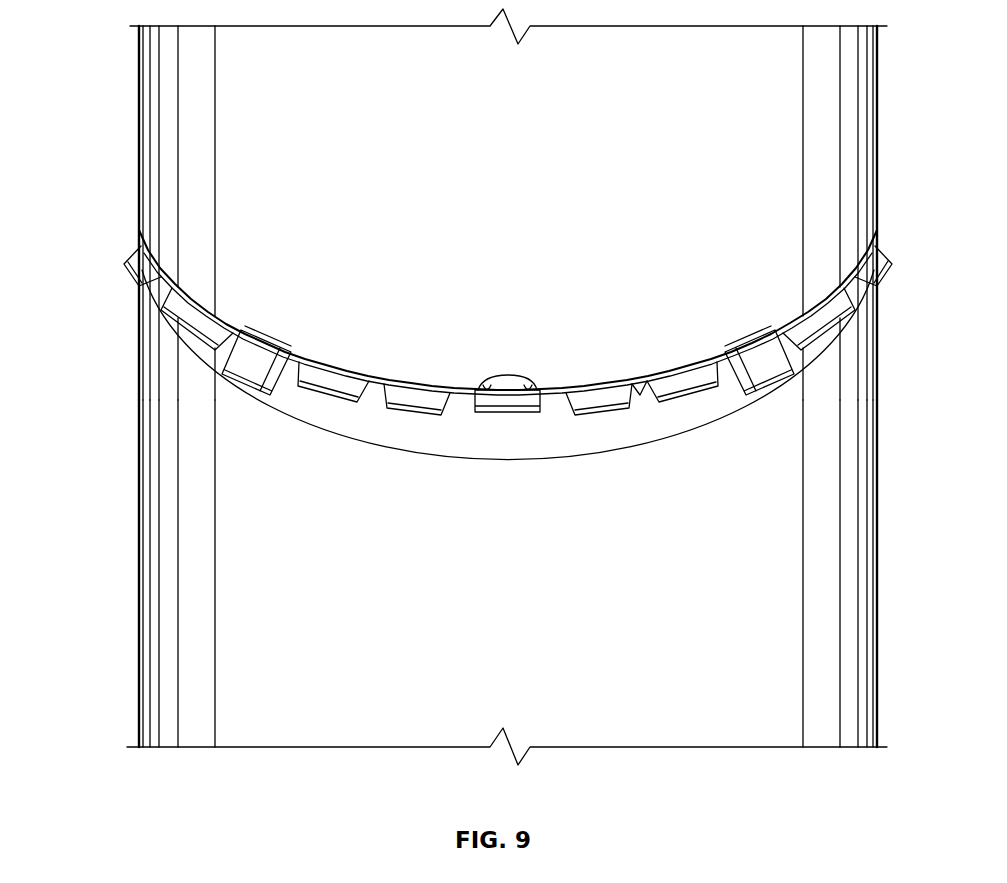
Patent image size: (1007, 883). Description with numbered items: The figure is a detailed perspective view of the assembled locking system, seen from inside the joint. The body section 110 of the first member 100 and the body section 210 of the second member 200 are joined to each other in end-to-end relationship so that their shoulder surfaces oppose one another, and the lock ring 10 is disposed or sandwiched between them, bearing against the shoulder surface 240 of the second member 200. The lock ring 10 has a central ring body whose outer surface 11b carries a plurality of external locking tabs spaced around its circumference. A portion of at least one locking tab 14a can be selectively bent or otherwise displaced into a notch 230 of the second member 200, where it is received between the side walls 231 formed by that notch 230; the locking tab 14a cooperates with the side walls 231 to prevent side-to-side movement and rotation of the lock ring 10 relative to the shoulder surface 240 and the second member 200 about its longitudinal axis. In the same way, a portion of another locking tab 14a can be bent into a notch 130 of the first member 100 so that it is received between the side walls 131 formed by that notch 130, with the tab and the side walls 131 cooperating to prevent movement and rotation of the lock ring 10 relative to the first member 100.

The first member 100 is at (138, 143).
The body section 110 is at (832, 128).
The second member 200 is at (138, 619).
The body section 210 is at (850, 572).
The lock ring 10 is at (420, 424).
The notch 130 is at (145, 246).
The side walls 131 is at (489, 383).
The locking tab 14a is at (258, 374).
The outer surface 11b is at (640, 396).
The notch 230 is at (255, 393).
The side walls 231 is at (263, 342).
The shoulder surface 240 is at (350, 422).